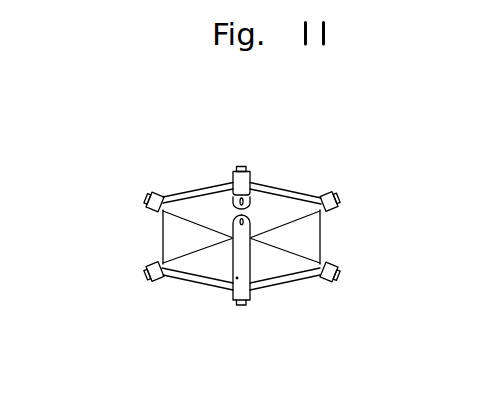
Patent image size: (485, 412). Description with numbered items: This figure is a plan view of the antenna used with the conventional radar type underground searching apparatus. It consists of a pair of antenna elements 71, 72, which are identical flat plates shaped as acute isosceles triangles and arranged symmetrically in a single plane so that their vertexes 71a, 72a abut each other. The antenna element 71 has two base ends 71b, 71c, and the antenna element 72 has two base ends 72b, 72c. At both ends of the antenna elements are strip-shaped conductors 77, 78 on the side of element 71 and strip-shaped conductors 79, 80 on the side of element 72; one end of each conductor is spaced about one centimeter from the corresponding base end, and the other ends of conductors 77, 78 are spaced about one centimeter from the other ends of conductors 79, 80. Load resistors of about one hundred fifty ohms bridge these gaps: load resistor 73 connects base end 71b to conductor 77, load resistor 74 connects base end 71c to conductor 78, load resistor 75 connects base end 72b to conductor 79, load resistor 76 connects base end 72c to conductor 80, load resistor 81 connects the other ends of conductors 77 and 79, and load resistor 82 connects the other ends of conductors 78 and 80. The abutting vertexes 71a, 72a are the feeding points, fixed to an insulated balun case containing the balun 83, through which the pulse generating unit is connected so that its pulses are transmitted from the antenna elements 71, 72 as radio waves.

The antenna element 71 is at (163, 235).
The vertex 71a is at (229, 240).
The base end 71b is at (163, 212).
The base end 71c is at (161, 258).
The antenna element 72 is at (322, 230).
The vertex 72a is at (255, 240).
The base end 72b is at (322, 210).
The base end 72c is at (321, 258).
The load resistor 73 is at (144, 197).
The load resistor 74 is at (146, 284).
The load resistor 75 is at (338, 196).
The load resistor 76 is at (337, 282).
The strip-shaped conductor 77 is at (203, 189).
The strip-shaped conductor 78 is at (194, 282).
The strip-shaped conductor 79 is at (261, 181).
The strip-shaped conductor 80 is at (303, 279).
The load resistor 81 is at (243, 166).
The load resistor 82 is at (246, 306).
The balun 83 is at (253, 207).